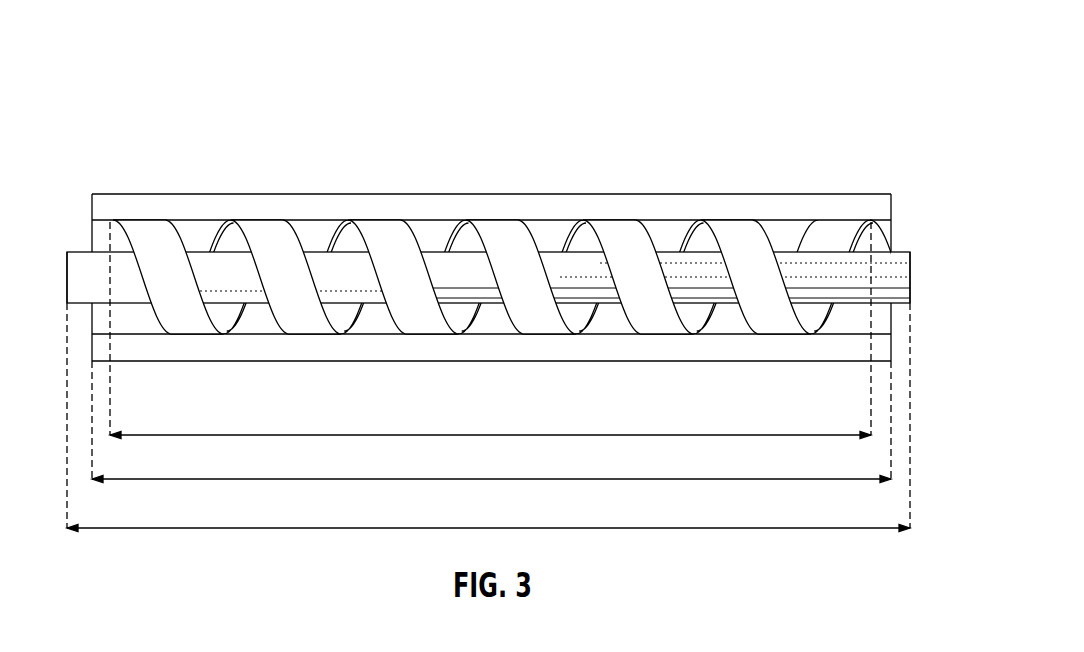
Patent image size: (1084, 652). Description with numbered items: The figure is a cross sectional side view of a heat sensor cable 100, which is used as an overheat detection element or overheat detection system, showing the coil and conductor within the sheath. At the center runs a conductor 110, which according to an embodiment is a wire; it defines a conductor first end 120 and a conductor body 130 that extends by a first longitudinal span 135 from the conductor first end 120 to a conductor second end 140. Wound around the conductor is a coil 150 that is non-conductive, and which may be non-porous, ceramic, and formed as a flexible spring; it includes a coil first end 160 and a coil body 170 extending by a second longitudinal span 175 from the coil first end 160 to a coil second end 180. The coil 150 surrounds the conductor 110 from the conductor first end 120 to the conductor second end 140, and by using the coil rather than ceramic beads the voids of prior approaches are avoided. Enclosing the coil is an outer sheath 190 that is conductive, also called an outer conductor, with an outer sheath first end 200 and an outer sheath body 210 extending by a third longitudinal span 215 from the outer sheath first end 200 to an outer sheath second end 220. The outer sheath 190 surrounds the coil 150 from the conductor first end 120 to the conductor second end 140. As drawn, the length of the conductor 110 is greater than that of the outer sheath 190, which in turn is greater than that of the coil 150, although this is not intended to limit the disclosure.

The heat sensor cable 100 is at (502, 276).
The conductor 110 is at (855, 305).
The conductor first end 120 is at (890, 293).
The conductor body 130 is at (521, 275).
The first longitudinal span 135 is at (492, 528).
The conductor second end 140 is at (97, 268).
The coil 150 is at (498, 231).
The coil first end 160 is at (693, 318).
The coil body 170 is at (388, 236).
The second longitudinal span 175 is at (492, 479).
The coil second end 180 is at (153, 220).
The outer sheath 190 is at (210, 348).
The outer sheath first end 200 is at (856, 193).
The outer sheath body 210 is at (673, 196).
The third longitudinal span 215 is at (492, 435).
The outer sheath second end 220 is at (108, 193).